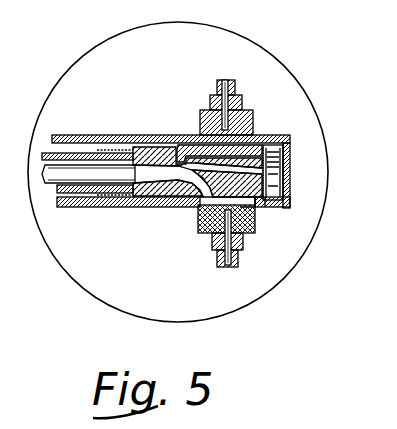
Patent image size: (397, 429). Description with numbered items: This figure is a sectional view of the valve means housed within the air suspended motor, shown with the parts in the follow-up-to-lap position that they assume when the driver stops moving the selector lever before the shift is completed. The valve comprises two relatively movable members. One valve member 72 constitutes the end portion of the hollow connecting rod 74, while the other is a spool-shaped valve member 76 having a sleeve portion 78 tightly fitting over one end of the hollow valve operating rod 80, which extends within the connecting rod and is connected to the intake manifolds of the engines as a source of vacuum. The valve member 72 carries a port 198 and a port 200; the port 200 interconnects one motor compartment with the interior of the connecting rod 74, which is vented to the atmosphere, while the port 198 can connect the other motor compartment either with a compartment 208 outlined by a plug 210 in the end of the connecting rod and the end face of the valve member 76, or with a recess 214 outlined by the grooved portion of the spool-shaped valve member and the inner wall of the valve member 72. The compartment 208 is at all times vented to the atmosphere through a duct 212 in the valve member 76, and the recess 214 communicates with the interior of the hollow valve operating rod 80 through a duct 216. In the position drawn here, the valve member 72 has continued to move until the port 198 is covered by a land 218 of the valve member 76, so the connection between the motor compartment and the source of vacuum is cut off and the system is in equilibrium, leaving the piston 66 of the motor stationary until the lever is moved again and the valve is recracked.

The piston 66 is at (231, 92).
The valve member 72 is at (197, 208).
The hollow connecting rod 74 is at (100, 208).
The spool-shaped valve member 76 is at (258, 147).
The sleeve portion 78 is at (113, 152).
The hollow valve operating rod 80 is at (50, 133).
The port 198 is at (260, 210).
The port 200 is at (188, 198).
The compartment 208 is at (275, 187).
The plug 210 is at (290, 157).
The duct 212 is at (175, 153).
The recess 214 is at (242, 240).
The duct 216 is at (160, 184).
The land 218 is at (283, 210).